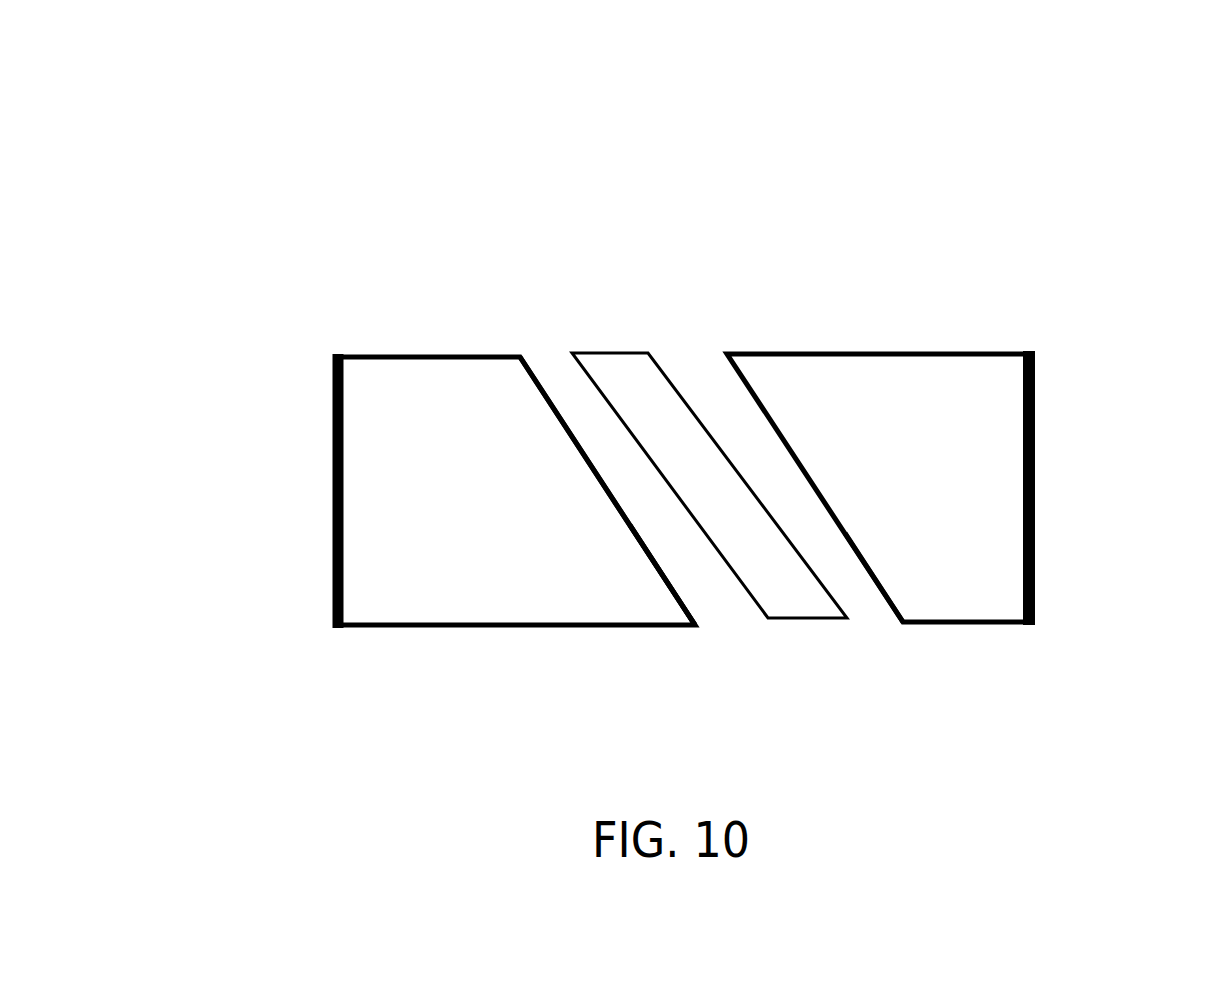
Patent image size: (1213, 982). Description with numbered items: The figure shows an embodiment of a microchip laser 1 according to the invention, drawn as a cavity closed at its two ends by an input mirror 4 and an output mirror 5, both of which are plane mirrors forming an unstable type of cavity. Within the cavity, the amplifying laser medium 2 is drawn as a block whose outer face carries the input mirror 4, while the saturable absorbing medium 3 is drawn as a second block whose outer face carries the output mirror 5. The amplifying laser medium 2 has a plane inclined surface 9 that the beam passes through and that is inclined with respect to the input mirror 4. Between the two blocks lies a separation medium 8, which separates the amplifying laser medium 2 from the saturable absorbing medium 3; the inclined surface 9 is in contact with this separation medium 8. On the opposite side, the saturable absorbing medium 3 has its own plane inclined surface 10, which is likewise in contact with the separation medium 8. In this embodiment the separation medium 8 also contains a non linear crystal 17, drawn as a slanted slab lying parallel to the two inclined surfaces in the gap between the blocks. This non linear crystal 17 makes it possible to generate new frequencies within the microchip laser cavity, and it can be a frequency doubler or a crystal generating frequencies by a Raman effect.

The microchip laser 1 is at (290, 204).
The amplifying laser medium 2 is at (420, 449).
The saturable absorbing medium 3 is at (870, 381).
The input mirror 4 is at (324, 579).
The output mirror 5 is at (1041, 566).
The separation medium 8 is at (583, 415).
The inclined surface 9 is at (645, 548).
The inclined surface 10 is at (859, 560).
The non linear crystal 17 is at (630, 377).